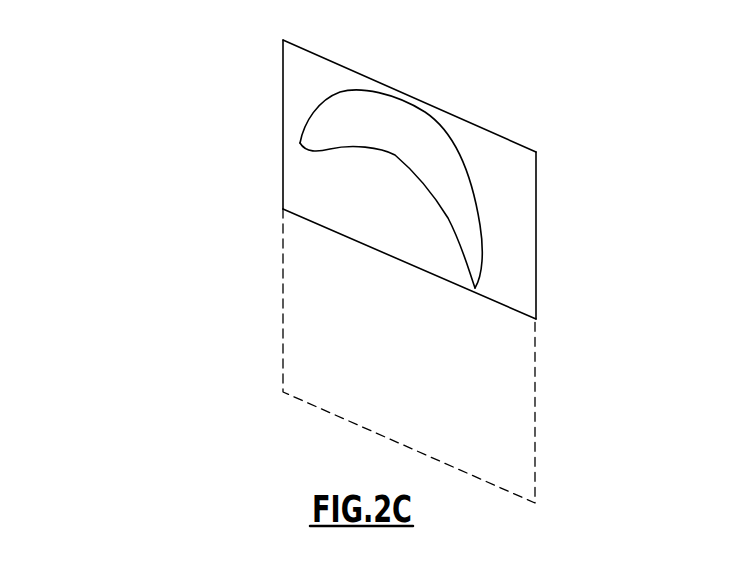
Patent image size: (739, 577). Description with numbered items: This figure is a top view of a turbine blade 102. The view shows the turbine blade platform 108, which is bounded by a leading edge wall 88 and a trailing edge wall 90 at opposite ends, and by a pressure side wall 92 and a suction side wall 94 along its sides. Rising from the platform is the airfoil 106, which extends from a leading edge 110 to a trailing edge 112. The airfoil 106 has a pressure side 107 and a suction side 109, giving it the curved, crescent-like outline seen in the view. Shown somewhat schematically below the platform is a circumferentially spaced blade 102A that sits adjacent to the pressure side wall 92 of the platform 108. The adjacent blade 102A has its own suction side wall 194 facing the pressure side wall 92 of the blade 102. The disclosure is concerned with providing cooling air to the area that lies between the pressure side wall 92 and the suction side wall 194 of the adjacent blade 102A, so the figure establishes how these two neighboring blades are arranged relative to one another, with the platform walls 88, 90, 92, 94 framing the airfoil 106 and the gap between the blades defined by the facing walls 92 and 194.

The turbine blade 102 is at (119, 87).
The circumferentially spaced blade 102A is at (318, 336).
The leading edge wall 88 is at (283, 163).
The trailing edge wall 90 is at (536, 242).
The pressure side wall 92 is at (350, 238).
The suction side wall 94 is at (450, 113).
The airfoil 106 is at (445, 188).
The pressure side 107 is at (379, 154).
The turbine blade platform 108 is at (477, 143).
The suction side 109 is at (477, 217).
The leading edge 110 is at (300, 143).
The trailing edge 112 is at (475, 288).
The suction side wall of adjacent blade 194 is at (392, 243).